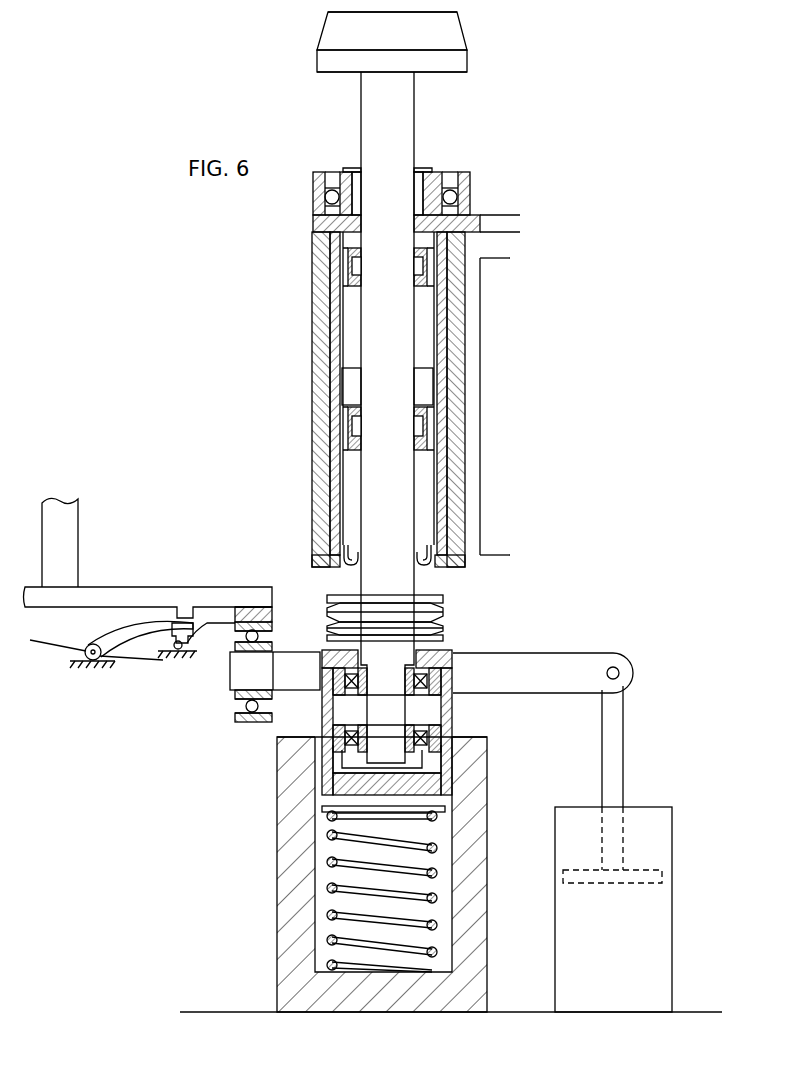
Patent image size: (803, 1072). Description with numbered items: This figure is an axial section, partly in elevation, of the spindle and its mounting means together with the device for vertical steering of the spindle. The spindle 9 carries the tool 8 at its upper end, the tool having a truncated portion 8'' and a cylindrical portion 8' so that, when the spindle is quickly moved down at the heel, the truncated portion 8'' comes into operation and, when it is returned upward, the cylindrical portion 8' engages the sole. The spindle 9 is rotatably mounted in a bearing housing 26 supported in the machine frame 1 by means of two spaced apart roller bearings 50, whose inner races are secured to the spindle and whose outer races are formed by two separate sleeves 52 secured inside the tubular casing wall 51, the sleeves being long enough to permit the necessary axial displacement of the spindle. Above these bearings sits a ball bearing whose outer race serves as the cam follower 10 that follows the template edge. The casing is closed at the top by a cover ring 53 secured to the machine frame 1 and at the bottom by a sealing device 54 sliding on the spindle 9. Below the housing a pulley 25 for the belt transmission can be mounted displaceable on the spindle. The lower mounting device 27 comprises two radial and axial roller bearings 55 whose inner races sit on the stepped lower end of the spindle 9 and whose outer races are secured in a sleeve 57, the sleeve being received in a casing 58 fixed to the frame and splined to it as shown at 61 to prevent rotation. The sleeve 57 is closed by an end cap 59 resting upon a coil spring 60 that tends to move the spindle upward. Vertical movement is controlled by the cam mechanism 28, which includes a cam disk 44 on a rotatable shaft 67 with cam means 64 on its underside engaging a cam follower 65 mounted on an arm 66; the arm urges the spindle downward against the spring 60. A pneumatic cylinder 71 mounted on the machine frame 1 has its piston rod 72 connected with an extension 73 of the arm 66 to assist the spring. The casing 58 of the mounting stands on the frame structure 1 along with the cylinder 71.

The machine frame 1 is at (671, 1001).
The tool 8 is at (412, 42).
The truncated portion 8'' is at (414, 20).
The cylindrical portion 8' is at (413, 66).
The spindle 9 is at (416, 120).
The cam follower 10 is at (313, 199).
The pulley 25 is at (444, 597).
The bearing housing 26 is at (468, 312).
The mounting device 27 is at (456, 660).
The cam mechanism 28 is at (171, 585).
The cam disk 44 is at (233, 590).
The roller bearings 50 is at (424, 270).
The outer cylinder 51 is at (462, 420).
The sleeves 52 is at (330, 304).
The cover ring 53 is at (316, 221).
The sealing device 54 is at (346, 568).
The radial and axial roller bearings 55 is at (441, 679).
The sleeve 57 is at (452, 768).
The casing 58 is at (483, 852).
The end cap 59 is at (445, 816).
The coil spring 60 is at (434, 900).
The splines 61 is at (320, 790).
The cam means 64 is at (272, 617).
The cam follower 65 is at (272, 637).
The arm 66 is at (318, 688).
The rotatable shaft 67 is at (70, 545).
The pneumatic cylinder 71 is at (664, 898).
The piston rod 72 is at (623, 723).
The extension 73 is at (559, 693).